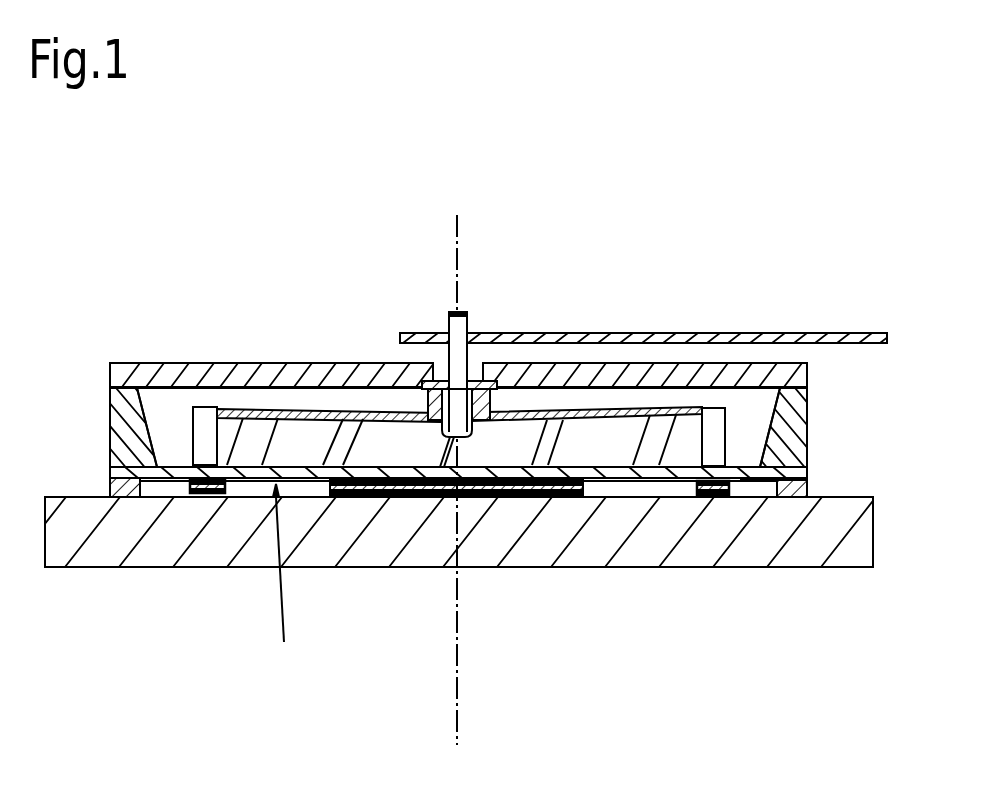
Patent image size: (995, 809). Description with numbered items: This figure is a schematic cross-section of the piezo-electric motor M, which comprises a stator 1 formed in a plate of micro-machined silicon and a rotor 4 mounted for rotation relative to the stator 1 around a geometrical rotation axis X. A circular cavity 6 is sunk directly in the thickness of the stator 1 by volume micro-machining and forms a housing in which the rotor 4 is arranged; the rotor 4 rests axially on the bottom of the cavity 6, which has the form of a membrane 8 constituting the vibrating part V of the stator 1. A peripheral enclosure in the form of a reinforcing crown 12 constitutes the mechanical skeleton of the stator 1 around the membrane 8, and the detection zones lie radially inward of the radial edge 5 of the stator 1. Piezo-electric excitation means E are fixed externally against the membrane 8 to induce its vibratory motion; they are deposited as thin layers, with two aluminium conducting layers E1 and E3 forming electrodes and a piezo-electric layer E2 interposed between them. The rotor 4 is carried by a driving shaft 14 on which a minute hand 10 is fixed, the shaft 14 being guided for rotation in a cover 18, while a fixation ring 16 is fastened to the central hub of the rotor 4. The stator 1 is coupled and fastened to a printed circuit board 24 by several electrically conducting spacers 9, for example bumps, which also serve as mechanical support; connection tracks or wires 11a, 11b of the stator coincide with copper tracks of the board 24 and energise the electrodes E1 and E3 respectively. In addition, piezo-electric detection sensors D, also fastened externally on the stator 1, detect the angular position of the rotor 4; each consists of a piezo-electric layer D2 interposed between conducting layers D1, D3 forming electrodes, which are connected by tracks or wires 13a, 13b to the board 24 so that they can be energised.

The motor M is at (105, 305).
The stator 1 is at (795, 443).
The rotor 4 is at (305, 410).
The radial edge 5 is at (805, 482).
The cavity 6 is at (168, 433).
The membrane 8 is at (583, 487).
The electrical conducting spacers 9 is at (110, 487).
The minute hand 10 is at (757, 339).
The connection track 11a is at (317, 497).
The connection track 11b is at (360, 497).
The reinforcing crown 12 is at (110, 445).
The connection track 13a is at (190, 497).
The connection track 13b is at (190, 497).
The driving shaft 14 is at (468, 322).
The fixation ring 16 is at (426, 392).
The cover 18 is at (800, 358).
The printed circuit board 24 is at (823, 560).
The piezo-electric detection sensor D is at (632, 577).
The electrically conducting layer D1 is at (262, 497).
The piezo-electric layer D2 is at (252, 497).
The electrically conducting layer D3 is at (243, 497).
The piezo-electric excitation means E is at (408, 590).
The electrically conducting layer E1 is at (390, 497).
The piezo-electric layer E2 is at (402, 490).
The electrically conducting layer E3 is at (413, 484).
The vibrating part V is at (290, 646).
The geometrical rotation axis X is at (455, 472).